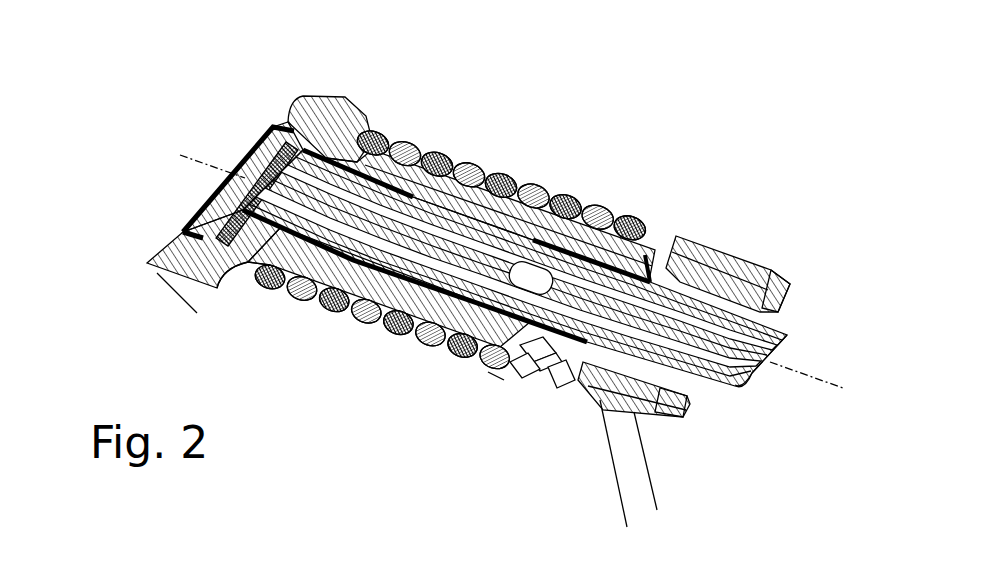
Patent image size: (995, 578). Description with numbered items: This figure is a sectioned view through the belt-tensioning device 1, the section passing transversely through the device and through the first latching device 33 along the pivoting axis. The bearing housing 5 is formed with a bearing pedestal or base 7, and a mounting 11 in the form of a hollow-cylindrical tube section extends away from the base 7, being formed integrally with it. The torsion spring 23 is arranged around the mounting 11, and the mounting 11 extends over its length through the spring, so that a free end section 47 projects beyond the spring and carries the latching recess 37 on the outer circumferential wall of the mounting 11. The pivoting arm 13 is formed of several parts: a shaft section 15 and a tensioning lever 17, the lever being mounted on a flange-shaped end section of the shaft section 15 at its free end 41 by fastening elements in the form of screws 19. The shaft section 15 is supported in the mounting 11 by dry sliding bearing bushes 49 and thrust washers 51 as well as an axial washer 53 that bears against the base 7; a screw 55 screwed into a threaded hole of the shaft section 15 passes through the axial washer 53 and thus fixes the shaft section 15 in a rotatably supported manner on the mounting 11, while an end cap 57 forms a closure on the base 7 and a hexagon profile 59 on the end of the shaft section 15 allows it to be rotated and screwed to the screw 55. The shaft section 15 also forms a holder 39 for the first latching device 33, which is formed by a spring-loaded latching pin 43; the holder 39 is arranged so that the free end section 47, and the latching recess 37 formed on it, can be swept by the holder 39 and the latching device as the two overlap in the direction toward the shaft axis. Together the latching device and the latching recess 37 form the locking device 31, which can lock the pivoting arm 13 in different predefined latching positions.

The belt-tensioning device 1 is at (650, 116).
The bearing housing 5 is at (180, 253).
The bearing pedestal or base 7 is at (497, 147).
The mounting 11 is at (540, 222).
The pivoting arm 13 is at (497, 243).
The shaft section 15 is at (440, 220).
The tensioning lever 17 is at (640, 410).
The fastening elements (screws) 19 is at (773, 280).
The torsion spring 23 is at (502, 186).
The locking device 31 is at (429, 410).
The first latching device 33 is at (507, 386).
The latching recess (elongate hole) 37 is at (552, 364).
The holder 39 is at (558, 386).
The free end 41 is at (727, 245).
The latching pin 43 is at (538, 361).
The free end section 47 is at (652, 255).
The sliding bearing bushes 49 is at (380, 181).
The thrust washers 51 is at (300, 165).
The axial washer 53 is at (300, 105).
The screw 55 is at (255, 168).
The end cap 57 is at (265, 130).
The hexagon profile 59 is at (787, 337).